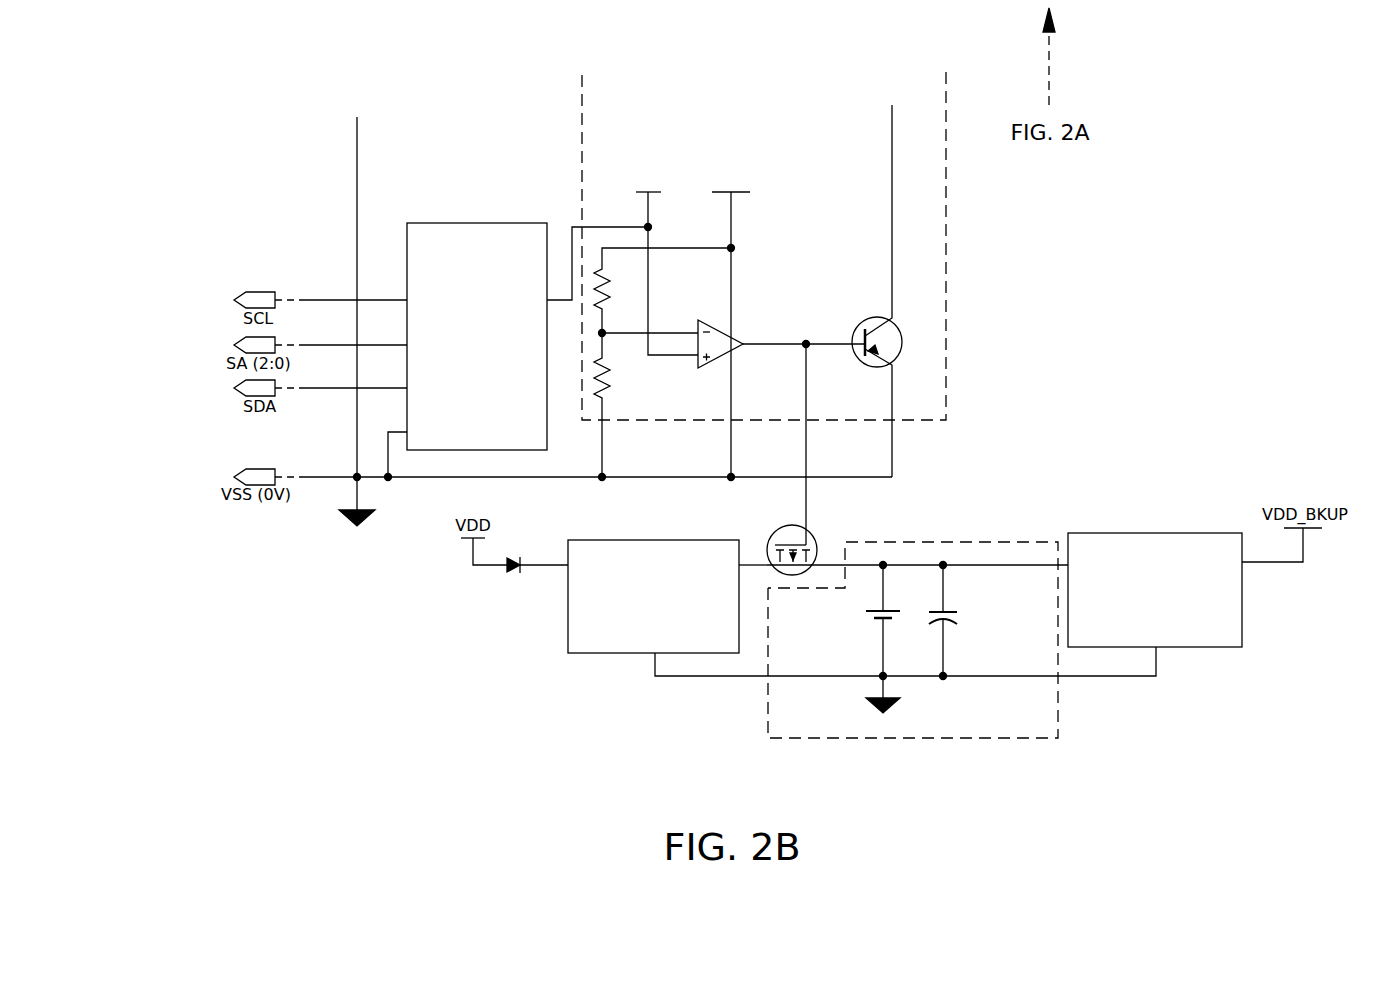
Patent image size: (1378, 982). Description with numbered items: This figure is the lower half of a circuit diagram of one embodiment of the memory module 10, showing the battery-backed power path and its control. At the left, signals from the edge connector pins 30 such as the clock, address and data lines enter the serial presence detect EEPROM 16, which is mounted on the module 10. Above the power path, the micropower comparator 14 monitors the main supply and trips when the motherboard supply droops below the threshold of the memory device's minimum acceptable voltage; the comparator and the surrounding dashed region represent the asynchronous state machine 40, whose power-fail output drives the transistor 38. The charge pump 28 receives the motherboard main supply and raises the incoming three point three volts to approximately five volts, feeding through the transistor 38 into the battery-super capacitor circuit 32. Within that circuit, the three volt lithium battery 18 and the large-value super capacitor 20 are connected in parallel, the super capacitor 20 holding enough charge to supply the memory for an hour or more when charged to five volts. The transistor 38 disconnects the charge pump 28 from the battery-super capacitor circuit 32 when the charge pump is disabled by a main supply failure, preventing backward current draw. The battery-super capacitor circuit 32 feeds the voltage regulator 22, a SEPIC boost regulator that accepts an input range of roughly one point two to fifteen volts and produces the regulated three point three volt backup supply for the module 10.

The memory module 10 is at (1257, 758).
The micropower comparator 14 is at (718, 325).
The serial presence detect EEPROM 16 is at (462, 428).
The battery 18 is at (828, 657).
The large-value super capacitor 20 is at (950, 640).
The voltage regulator 22 is at (1155, 547).
The charge pump 28 is at (572, 607).
The edge connector pins 30 is at (200, 515).
The battery-super capacitor circuit 32 is at (950, 640).
The transistor 38 is at (817, 535).
The asynchronous state machine 40 is at (801, 273).